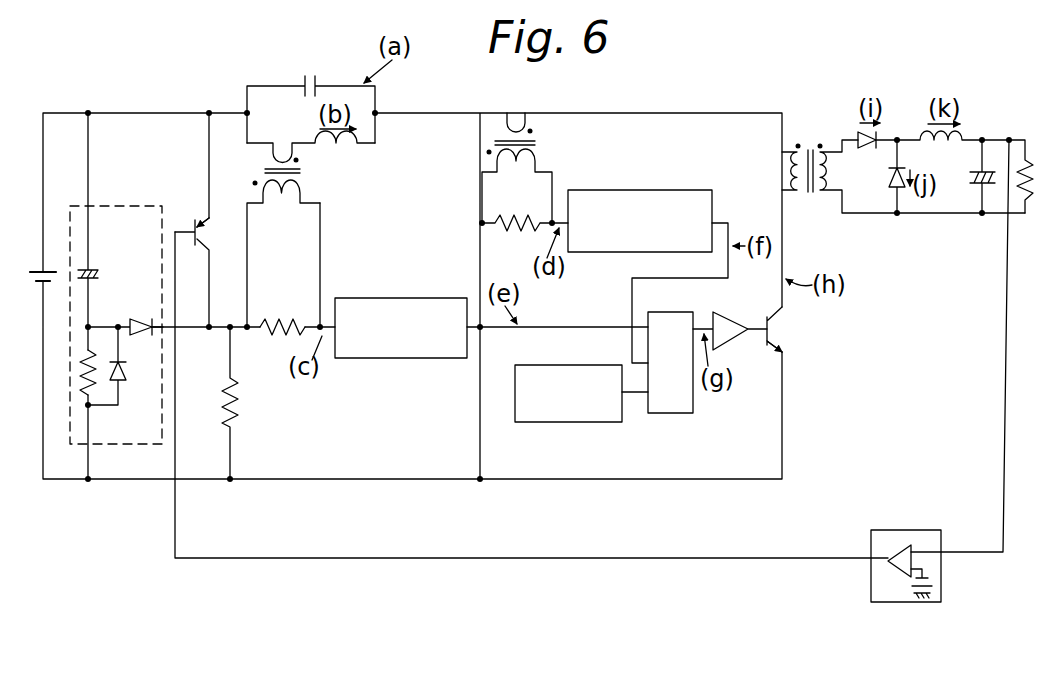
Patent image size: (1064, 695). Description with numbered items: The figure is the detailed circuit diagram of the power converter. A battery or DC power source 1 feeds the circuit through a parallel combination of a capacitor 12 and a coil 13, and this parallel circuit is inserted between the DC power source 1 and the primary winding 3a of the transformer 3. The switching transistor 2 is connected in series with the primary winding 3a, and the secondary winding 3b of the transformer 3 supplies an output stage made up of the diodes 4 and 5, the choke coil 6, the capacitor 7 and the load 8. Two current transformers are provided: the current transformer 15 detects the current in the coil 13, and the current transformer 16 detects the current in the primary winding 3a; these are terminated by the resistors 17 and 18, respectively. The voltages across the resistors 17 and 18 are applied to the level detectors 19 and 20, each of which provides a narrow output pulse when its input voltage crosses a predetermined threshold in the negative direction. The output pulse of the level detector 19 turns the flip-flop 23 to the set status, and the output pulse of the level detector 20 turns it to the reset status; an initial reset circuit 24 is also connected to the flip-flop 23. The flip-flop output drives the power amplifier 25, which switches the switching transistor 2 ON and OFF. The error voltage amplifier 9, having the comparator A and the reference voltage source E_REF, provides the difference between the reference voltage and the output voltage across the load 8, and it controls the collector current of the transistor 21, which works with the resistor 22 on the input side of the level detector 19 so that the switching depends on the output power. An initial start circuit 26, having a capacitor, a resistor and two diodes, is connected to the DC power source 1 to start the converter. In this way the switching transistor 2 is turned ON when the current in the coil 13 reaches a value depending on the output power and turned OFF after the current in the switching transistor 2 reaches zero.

The DC power source 1 is at (51, 269).
The switching transistor 2 is at (782, 340).
The transformer 3 is at (883, 149).
The primary winding 3a is at (790, 172).
The secondary winding 3b is at (829, 183).
The diode 4 is at (856, 135).
The diode 5 is at (883, 176).
The choke coil 6 is at (928, 131).
The capacitor 7 is at (967, 179).
The load 8 is at (1027, 150).
The error voltage amplifier 9 is at (902, 530).
The capacitor 12 is at (319, 77).
The coil 13 is at (347, 150).
The current transformer 15 is at (312, 176).
The current transformer 16 is at (536, 133).
The resistor 17 is at (280, 319).
The resistor 18 is at (518, 227).
The level detector 19 is at (398, 298).
The level detector 20 is at (664, 190).
The transistor 21 is at (203, 236).
The resistor 22 is at (240, 405).
The flip-flop 23 is at (676, 413).
The initial reset circuit 24 is at (575, 422).
The power amplifier 25 is at (742, 305).
The initial start circuit 26 is at (127, 206).